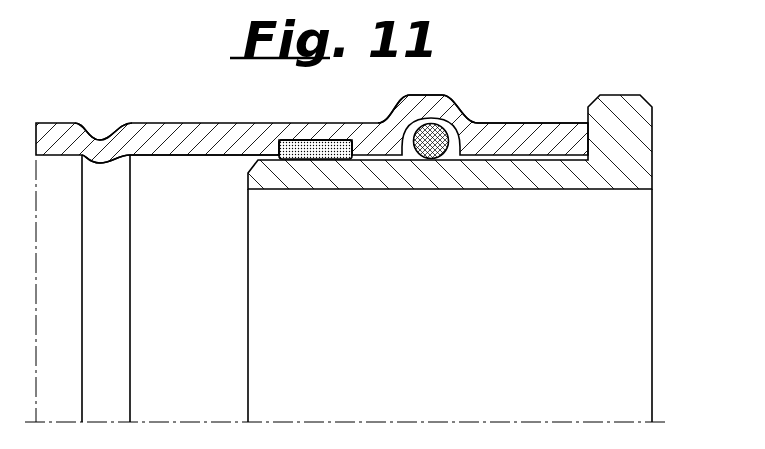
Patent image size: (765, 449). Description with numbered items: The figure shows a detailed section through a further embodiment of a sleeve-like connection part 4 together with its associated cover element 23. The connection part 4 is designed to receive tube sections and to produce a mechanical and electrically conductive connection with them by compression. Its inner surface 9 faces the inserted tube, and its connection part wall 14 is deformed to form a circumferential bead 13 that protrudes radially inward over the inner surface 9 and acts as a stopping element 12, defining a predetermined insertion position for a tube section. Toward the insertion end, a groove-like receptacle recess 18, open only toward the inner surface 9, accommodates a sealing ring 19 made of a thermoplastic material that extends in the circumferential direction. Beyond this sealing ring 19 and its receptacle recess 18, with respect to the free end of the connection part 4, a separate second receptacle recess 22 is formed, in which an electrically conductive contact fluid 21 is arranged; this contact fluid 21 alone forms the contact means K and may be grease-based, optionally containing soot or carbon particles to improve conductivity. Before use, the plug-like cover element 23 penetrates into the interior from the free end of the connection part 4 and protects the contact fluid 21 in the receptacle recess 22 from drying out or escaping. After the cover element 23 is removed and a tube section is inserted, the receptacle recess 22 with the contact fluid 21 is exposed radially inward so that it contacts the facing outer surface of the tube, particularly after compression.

The connection part 4 is at (163, 122).
The inner surface 9 is at (230, 155).
The stopping element 12 is at (106, 146).
The bead 13 is at (94, 137).
The connection part wall 14 is at (533, 140).
The receptacle recess 18 is at (435, 140).
The sealing ring 19 is at (457, 134).
The contact fluid 21 is at (329, 147).
The receptacle recess 22 is at (297, 147).
The contact means K is at (306, 140).
The cover element 23 is at (627, 167).